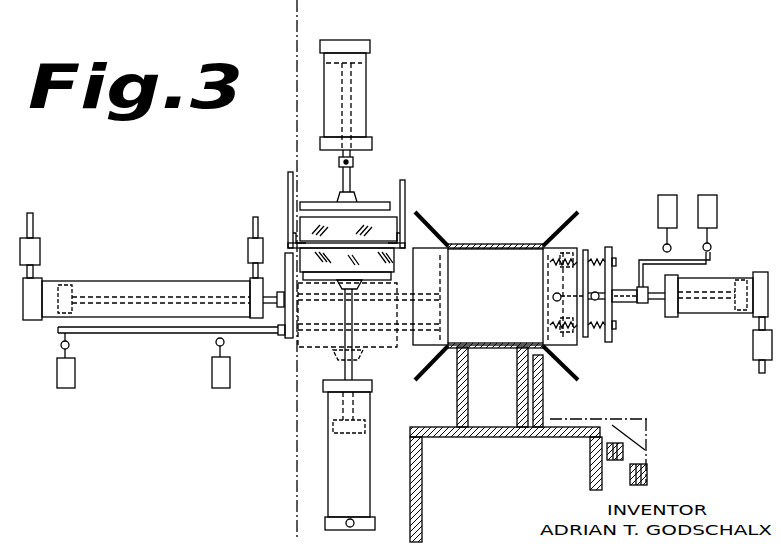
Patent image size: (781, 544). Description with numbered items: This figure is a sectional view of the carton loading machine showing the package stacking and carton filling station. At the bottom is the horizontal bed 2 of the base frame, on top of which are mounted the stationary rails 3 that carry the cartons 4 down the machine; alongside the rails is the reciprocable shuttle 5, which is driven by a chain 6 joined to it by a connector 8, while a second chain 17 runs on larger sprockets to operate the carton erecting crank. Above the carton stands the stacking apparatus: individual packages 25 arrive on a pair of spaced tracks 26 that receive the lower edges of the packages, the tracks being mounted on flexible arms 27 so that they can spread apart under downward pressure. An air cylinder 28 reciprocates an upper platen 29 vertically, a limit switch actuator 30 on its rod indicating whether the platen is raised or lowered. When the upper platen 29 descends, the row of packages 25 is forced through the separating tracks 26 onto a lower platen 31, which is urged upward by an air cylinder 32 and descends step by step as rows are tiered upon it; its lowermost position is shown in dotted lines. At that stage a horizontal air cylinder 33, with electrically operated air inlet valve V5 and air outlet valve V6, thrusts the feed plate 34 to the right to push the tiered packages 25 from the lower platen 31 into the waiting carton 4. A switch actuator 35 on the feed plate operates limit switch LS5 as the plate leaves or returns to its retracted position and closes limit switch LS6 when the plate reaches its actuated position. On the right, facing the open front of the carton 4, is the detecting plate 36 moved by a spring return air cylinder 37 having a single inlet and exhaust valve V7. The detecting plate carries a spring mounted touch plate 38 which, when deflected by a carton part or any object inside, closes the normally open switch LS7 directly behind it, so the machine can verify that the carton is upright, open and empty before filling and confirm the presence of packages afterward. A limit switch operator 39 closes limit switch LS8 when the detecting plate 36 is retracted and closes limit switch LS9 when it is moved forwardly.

The bed 2 is at (247, 15).
The stationary rails 3 is at (517, 397).
The carton 4 is at (500, 246).
The shuttle 5 is at (544, 390).
The chain 6 is at (640, 470).
The connector 8 is at (645, 418).
The second chain 17 is at (625, 450).
The packages 25 is at (376, 228).
The tracks 26 is at (292, 244).
The flexible arms 27 is at (287, 177).
The air cylinder 28 is at (372, 93).
The upper platen 29 is at (370, 202).
The limit switch actuator 30 is at (354, 161).
The lower platen 31 is at (374, 279).
The air cylinder 32 is at (371, 462).
The air cylinder 33 is at (143, 281).
The feed plate 34 is at (283, 313).
The switch actuator 35 is at (155, 333).
The detecting plate 36 is at (608, 248).
The air cylinder 37 is at (712, 314).
The touch plate 38 is at (586, 250).
The limit switch operator 39 is at (712, 259).
The air inlet valve V5 is at (41, 243).
The air outlet valve V6 is at (248, 252).
The air inlet and exhaust valve V7 is at (754, 348).
The limit switch LS5 is at (75, 372).
The limit switch LS6 is at (220, 379).
The normally open switch LS7 is at (622, 311).
The limit switch LS8 is at (707, 195).
The limit switch LS9 is at (667, 195).